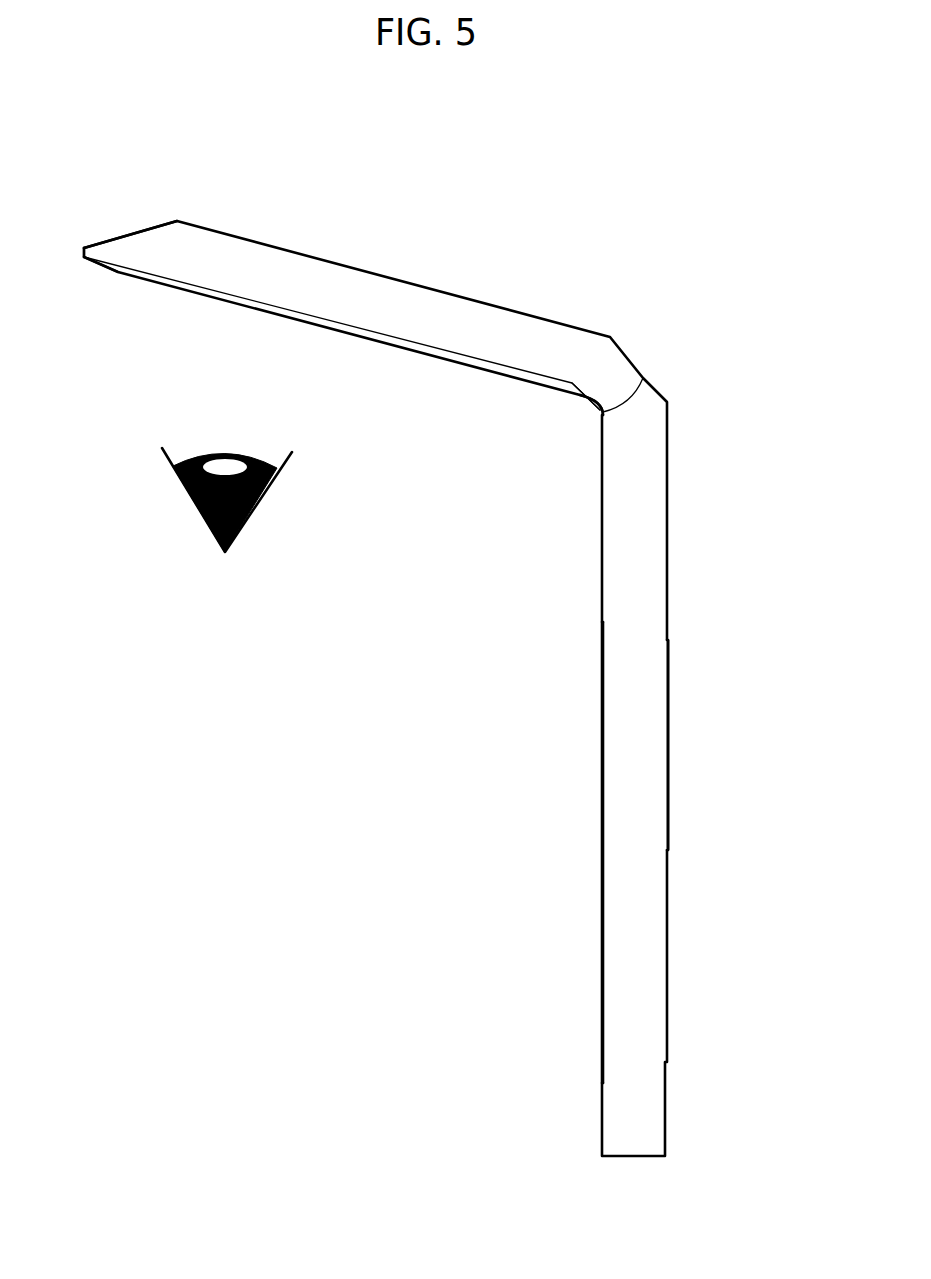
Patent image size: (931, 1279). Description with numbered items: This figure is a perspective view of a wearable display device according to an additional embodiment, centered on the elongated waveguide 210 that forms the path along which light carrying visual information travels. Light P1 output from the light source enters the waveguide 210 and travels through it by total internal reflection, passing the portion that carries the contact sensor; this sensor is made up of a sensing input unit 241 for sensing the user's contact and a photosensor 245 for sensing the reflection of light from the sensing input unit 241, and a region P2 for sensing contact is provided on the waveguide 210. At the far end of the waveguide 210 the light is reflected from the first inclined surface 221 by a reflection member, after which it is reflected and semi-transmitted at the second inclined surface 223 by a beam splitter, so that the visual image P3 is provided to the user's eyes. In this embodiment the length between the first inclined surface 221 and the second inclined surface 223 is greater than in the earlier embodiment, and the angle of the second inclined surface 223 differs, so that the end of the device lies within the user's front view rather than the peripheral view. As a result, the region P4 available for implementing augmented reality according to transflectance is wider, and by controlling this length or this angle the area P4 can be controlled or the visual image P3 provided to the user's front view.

The waveguide 210 is at (627, 750).
The first inclined surface 221 is at (601, 411).
The second inclined surface 223 is at (122, 236).
The sensing input unit 241 is at (668, 892).
The photosensor 245 is at (602, 902).
The light incident on waveguide P1 is at (740, 1057).
The region for sensing contact P2 is at (740, 517).
The visual image provided to user's eyes P3 is at (223, 308).
The augmented reality implementing region P4 is at (605, 332).